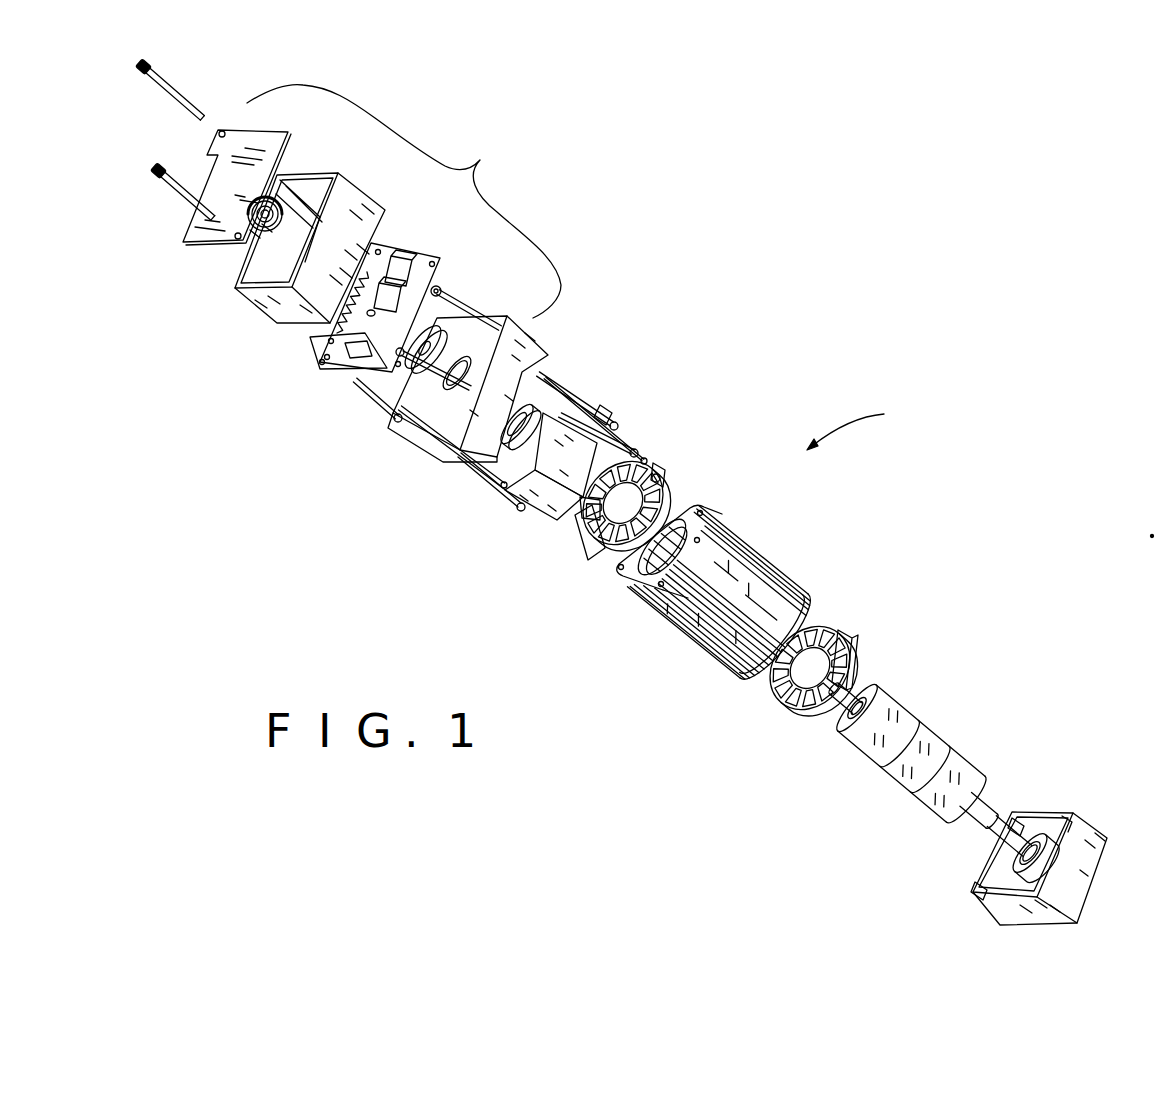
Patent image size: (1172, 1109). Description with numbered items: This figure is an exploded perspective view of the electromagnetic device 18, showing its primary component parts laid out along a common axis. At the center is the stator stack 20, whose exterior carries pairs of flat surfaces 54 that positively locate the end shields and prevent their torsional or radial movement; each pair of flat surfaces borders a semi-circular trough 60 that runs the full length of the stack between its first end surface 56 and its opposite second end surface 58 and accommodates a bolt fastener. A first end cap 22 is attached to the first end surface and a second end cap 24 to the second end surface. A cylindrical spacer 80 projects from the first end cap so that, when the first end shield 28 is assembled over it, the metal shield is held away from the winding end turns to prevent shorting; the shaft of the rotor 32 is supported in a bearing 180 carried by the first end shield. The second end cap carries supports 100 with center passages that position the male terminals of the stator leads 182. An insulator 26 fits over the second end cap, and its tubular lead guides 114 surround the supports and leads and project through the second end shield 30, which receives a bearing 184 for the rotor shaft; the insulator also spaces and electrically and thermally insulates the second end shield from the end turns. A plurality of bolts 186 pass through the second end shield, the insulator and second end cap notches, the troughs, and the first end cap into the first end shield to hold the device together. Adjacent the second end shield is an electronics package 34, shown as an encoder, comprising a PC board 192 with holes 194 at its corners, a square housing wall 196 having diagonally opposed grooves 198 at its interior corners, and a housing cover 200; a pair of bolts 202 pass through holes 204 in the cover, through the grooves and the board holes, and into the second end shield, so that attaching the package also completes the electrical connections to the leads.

The electromagnetic device 18 is at (864, 426).
The stator stack 20 is at (773, 593).
The first end cap 22 is at (847, 633).
The second end cap 24 is at (655, 475).
The insulator 26 is at (612, 408).
The first end shield 28 is at (1090, 840).
The second end shield 30 is at (517, 348).
The rotor 32 is at (937, 760).
The electronics package 34 is at (404, 201).
The flat surfaces 54 is at (720, 520).
The first end surface 56 is at (630, 587).
The second end surface 58 is at (745, 677).
The trough 60 is at (738, 543).
The spacer 80 is at (858, 680).
The supports 100 is at (640, 462).
The lead guides 114 is at (580, 400).
The bearing 180 is at (1040, 840).
The stator leads 182 is at (641, 410).
The bearing 184 is at (503, 485).
The bolts 186 is at (443, 302).
The PC board 192 is at (337, 367).
The holes 194 is at (423, 257).
The housing wall 196 is at (263, 297).
The grooves 198 is at (293, 197).
The housing cover 200 is at (203, 222).
The bolts 202 is at (177, 90).
The holes 204 is at (226, 132).